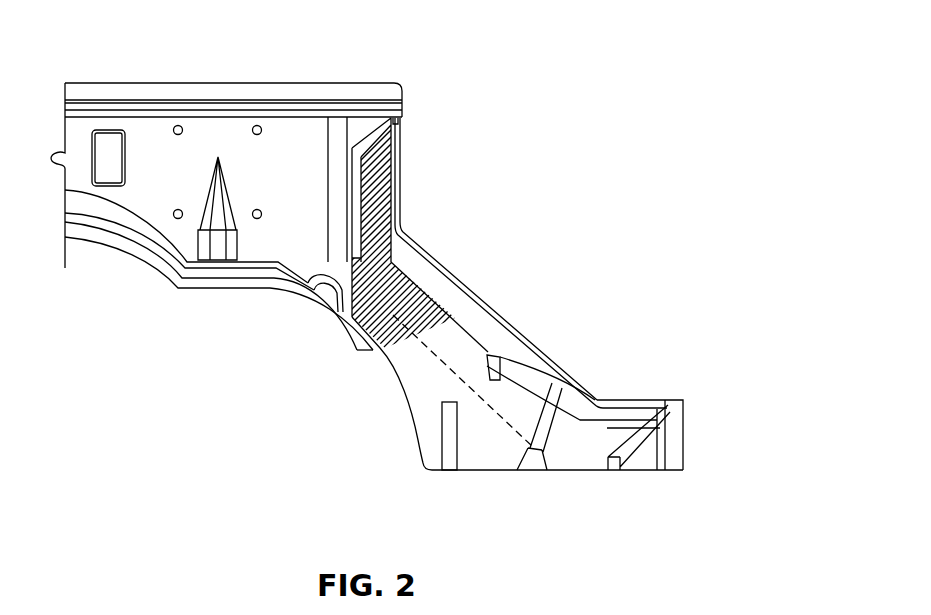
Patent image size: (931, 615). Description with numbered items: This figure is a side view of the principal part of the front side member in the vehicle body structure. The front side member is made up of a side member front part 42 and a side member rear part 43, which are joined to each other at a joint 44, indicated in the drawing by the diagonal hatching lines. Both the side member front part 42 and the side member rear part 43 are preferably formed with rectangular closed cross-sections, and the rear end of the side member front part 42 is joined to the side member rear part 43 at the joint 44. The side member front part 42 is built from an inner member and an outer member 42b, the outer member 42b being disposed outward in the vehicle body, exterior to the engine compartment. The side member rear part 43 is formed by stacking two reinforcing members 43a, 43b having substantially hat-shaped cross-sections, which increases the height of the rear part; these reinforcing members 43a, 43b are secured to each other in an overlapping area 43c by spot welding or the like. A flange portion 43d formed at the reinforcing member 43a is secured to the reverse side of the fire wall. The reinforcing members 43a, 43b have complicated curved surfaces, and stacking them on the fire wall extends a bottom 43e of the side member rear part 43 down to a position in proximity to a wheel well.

The side member front part 42 is at (187, 82).
The outer member 42b is at (157, 200).
The side member rear part 43 is at (475, 278).
The reinforcing member 43a is at (382, 188).
The reinforcing member 43b is at (423, 425).
The overlapping area 43c is at (497, 412).
The flange portion 43d is at (530, 338).
The bottom 43e is at (390, 377).
The joint 44 is at (390, 138).